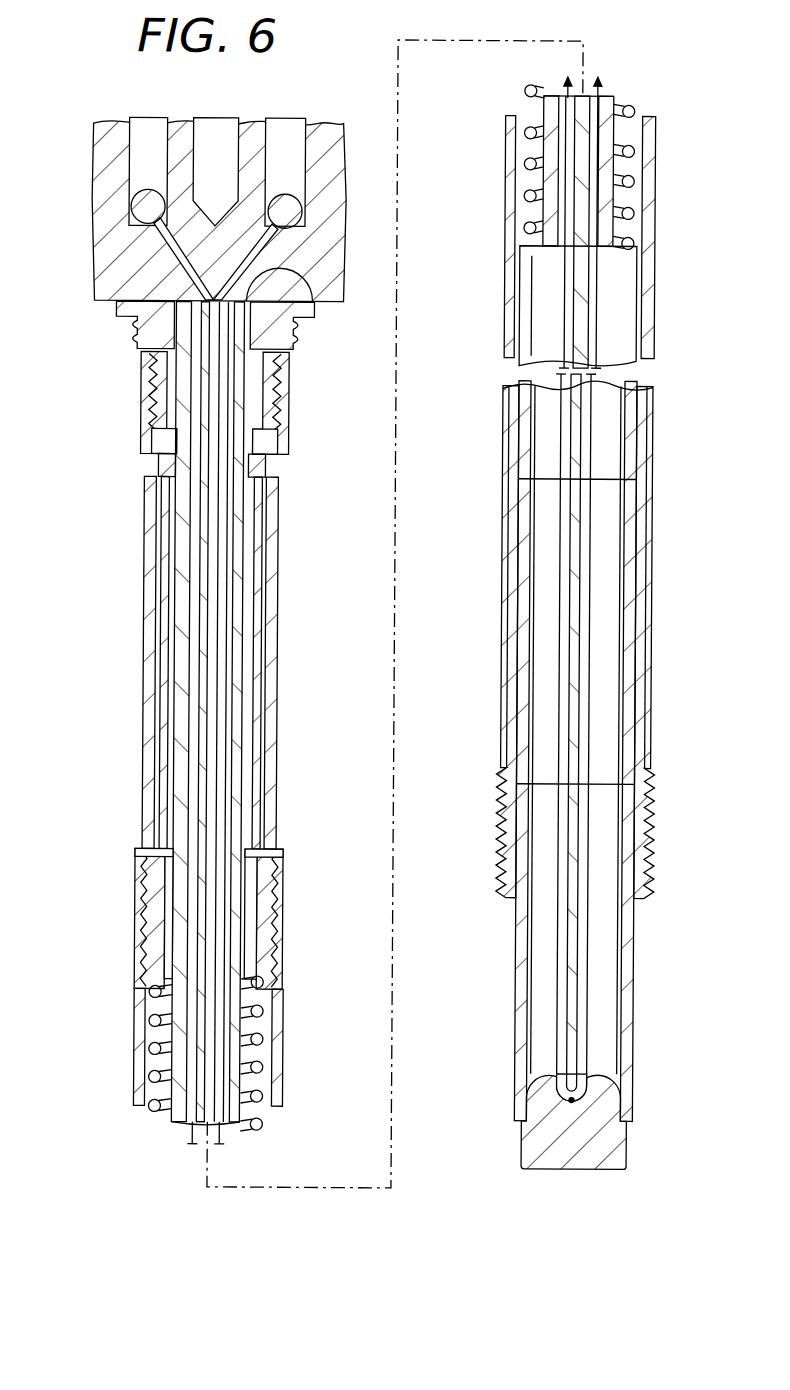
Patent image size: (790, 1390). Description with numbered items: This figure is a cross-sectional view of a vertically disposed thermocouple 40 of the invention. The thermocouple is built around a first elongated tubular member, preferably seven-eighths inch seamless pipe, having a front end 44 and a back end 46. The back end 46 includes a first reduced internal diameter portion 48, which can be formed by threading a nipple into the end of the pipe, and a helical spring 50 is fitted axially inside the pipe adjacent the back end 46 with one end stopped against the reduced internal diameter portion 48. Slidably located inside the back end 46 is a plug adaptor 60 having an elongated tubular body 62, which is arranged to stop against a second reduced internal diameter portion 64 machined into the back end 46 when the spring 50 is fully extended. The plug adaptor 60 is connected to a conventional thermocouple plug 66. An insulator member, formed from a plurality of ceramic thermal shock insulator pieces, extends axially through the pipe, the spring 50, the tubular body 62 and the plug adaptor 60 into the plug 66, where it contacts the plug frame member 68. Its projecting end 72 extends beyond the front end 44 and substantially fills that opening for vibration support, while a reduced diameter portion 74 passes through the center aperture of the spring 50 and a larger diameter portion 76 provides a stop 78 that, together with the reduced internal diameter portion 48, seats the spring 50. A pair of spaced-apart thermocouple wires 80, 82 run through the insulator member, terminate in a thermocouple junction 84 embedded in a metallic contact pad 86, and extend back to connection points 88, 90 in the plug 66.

The thermocouple 40 is at (118, 920).
The front end 44 is at (652, 775).
The back end 46 is at (280, 545).
The first reduced internal diameter portion 48 is at (264, 962).
The helical spring 50 is at (260, 1037).
The plug adaptor 60 is at (289, 409).
The elongated tubular body 62 is at (266, 470).
The second reduced internal diameter portion 64 is at (268, 856).
The thermocouple plug 66 is at (88, 255).
The plug frame member 68 is at (315, 307).
The projecting end 72 is at (634, 1060).
The reduced diameter portion 74 is at (238, 1092).
The larger diameter portion 76 is at (636, 330).
The stop 78 is at (636, 262).
The thermocouple wire 80 is at (560, 628).
The thermocouple wire 82 is at (592, 622).
The thermocouple junction 84 is at (575, 1101).
The metallic contact pad 86 is at (590, 1168).
The connection point 88 is at (285, 204).
The connection point 90 is at (148, 200).